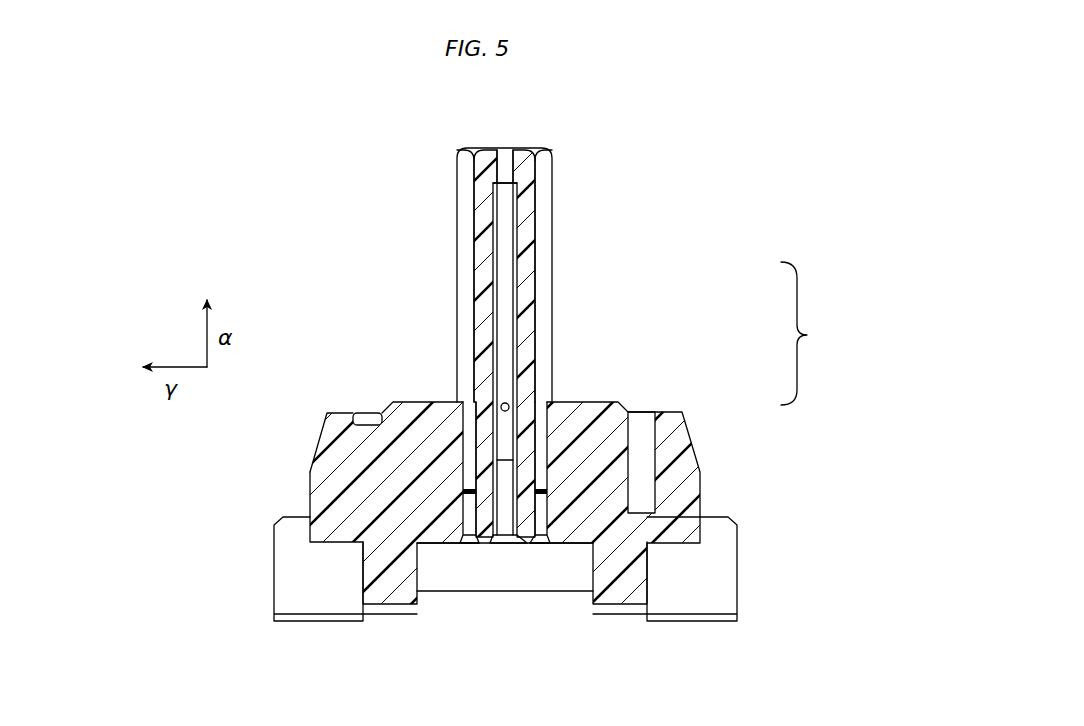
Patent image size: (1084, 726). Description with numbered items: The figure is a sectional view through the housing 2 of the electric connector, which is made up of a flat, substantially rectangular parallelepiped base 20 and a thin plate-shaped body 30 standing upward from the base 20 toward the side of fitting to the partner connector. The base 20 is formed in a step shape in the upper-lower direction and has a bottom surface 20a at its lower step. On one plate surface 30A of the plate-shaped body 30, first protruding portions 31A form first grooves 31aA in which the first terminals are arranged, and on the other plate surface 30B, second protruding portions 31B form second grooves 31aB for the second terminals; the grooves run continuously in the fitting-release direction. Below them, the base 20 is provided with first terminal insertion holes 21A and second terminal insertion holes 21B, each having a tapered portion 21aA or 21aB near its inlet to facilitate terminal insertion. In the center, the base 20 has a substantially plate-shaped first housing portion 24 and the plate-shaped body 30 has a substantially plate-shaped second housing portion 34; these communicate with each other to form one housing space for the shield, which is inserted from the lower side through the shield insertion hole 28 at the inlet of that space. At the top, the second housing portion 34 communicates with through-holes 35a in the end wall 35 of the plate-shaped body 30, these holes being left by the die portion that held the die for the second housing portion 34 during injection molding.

The housing 2 is at (804, 333).
The base 20 is at (703, 445).
The bottom surface 20a is at (313, 623).
The first terminal insertion hole 21A is at (535, 555).
The second terminal insertion hole 21B is at (470, 555).
The tapered portion 21aA is at (547, 548).
The tapered portion 21aB is at (462, 548).
The first housing portion 24 is at (509, 404).
The shield insertion hole 28 is at (498, 555).
The plate-shaped body 30 is at (560, 272).
The one plate surface 30A is at (560, 328).
The other plate surface 30B is at (455, 279).
The first protruding portion 31A is at (543, 206).
The second protruding portion 31B is at (462, 305).
The first groove 31aA is at (535, 240).
The second groove 31aB is at (474, 346).
The second housing portion 34 is at (500, 238).
The end wall 35 is at (524, 158).
The through-hole 35a is at (504, 158).